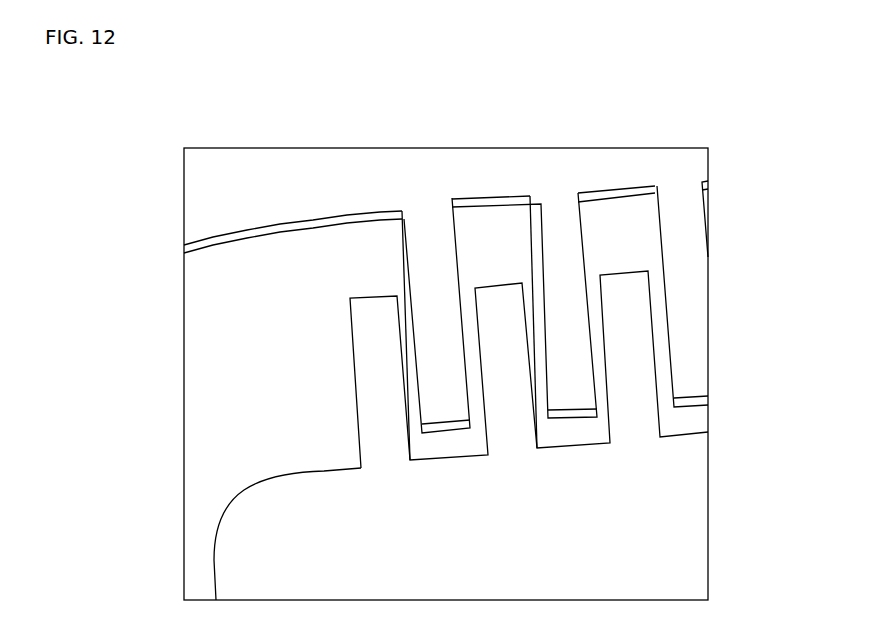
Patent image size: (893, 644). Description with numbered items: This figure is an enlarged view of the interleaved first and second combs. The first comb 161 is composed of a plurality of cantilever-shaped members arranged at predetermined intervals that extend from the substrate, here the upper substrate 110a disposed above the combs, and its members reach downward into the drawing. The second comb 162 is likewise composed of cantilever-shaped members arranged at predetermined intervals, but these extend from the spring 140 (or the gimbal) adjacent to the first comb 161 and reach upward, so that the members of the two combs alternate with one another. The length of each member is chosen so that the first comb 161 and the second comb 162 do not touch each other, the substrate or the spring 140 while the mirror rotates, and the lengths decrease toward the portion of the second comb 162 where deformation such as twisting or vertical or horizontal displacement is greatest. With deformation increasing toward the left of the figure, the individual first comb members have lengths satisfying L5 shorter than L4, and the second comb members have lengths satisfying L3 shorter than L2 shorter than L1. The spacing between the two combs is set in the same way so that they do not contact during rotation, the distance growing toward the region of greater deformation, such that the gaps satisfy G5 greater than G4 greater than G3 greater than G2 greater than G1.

The upper substrate 110a is at (287, 181).
The first comb 161 is at (692, 267).
The second comb 162 is at (662, 438).
The spring 140 is at (655, 553).
The length of second comb member L1 is at (635, 443).
The length of second comb member L2 is at (512, 455).
The length of second comb member L3 is at (368, 468).
The length of first comb member L4 is at (534, 196).
The length of first comb member L5 is at (406, 209).
The distance between first and second combs G1 is at (637, 418).
The distance between first and second combs G2 is at (648, 393).
The distance between first and second combs G3 is at (518, 430).
The distance between first and second combs G4 is at (520, 407).
The distance between first and second combs G5 is at (383, 445).